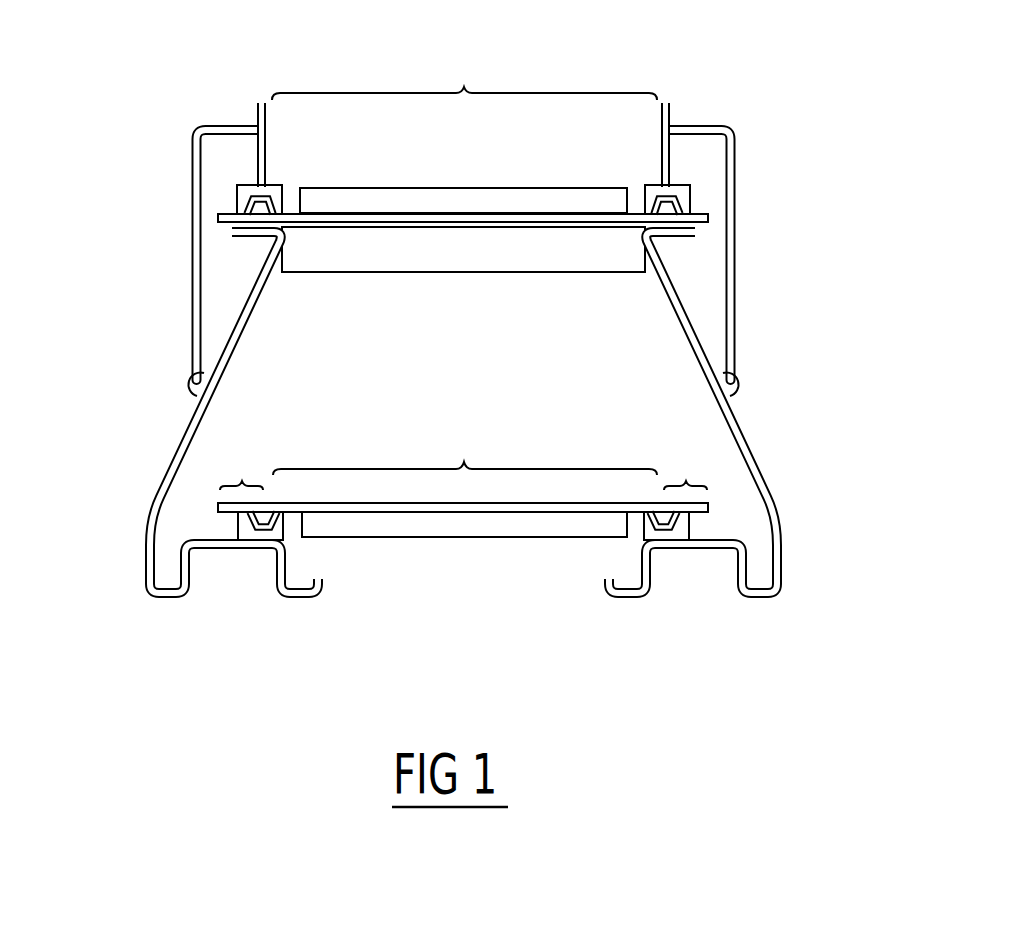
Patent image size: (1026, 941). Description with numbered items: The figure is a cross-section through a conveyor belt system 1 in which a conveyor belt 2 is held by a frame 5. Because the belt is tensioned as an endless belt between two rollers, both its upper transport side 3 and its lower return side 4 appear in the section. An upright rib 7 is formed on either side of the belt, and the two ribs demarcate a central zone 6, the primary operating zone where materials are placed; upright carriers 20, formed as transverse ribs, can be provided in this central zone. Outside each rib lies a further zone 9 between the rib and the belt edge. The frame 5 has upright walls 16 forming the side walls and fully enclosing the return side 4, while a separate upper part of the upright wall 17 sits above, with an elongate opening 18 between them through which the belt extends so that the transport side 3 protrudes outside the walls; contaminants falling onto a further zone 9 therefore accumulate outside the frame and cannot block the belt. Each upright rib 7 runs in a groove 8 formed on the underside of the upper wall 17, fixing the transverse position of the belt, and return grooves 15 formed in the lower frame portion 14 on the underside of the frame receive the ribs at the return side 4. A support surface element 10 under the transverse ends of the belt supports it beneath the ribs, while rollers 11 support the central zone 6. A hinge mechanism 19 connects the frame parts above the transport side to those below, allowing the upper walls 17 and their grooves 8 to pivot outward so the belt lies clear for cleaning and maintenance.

The conveyor belt system 1 is at (805, 114).
The conveyor belt 2 is at (290, 216).
The transport side 3 is at (376, 214).
The return side 4 is at (396, 511).
The frame 5 is at (644, 168).
The central zone 6 is at (464, 257).
The upright rib 7 is at (252, 231).
The groove 8 is at (256, 208).
The further zone 9 is at (227, 210).
The support surface element 10 is at (256, 237).
The rollers 11 is at (515, 243).
The bottom rail 14 is at (215, 542).
The return groove 15 is at (252, 524).
The upright wall 16 is at (246, 313).
The upper part of upright wall 17 is at (266, 150).
The elongate opening 18 is at (167, 217).
The hinge mechanism 19 is at (232, 126).
The upright carrier 20 is at (436, 202).